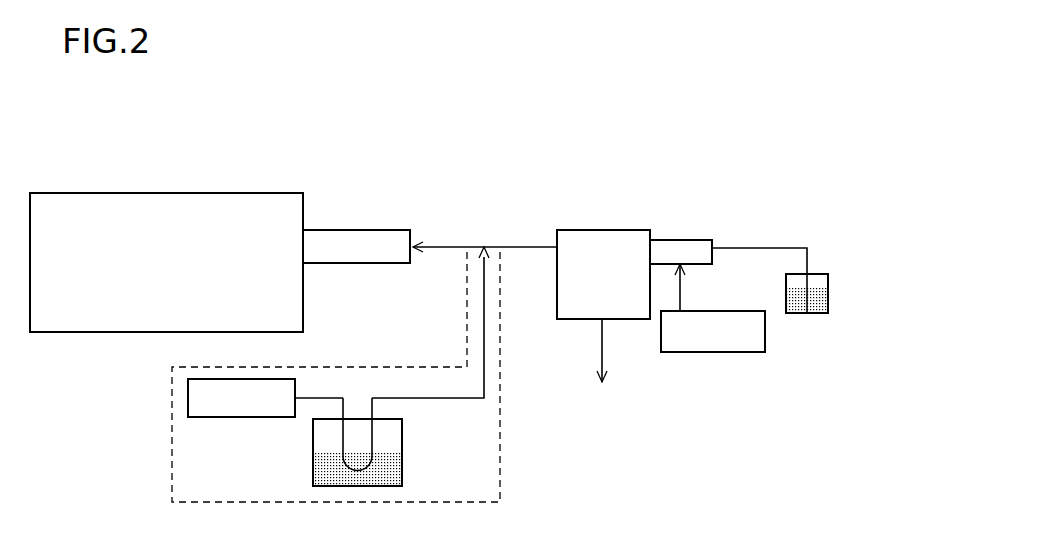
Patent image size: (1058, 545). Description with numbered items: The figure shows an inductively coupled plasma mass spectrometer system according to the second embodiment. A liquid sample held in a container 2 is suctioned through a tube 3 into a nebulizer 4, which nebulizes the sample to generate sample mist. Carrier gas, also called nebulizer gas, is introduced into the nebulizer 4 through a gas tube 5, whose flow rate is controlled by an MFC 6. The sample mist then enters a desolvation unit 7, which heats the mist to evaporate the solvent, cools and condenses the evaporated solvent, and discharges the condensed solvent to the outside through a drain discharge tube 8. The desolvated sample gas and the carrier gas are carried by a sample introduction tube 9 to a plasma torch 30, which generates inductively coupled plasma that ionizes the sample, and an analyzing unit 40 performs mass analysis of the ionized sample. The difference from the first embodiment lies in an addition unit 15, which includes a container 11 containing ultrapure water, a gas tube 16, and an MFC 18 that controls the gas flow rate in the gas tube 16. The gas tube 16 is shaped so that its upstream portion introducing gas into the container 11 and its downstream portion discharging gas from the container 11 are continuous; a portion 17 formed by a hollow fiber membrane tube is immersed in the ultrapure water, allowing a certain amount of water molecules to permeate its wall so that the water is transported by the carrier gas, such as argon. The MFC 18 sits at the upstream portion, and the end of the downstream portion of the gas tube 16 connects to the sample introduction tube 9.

The container 2 is at (829, 296).
The tube 3 is at (788, 248).
The nebulizer 4 is at (684, 240).
The gas tube 5 is at (682, 295).
The MFC 6 is at (712, 352).
The desolvation unit 7 is at (623, 230).
The drain discharge tube 8 is at (601, 352).
The sample introduction tube 9 is at (507, 247).
The container 11 is at (402, 455).
The addition unit 15 is at (502, 465).
The gas tube 16 is at (486, 344).
The hollow fiber filter portion 17 is at (356, 470).
The MFC 18 is at (240, 417).
The plasma torch 30 is at (355, 230).
The analyzing unit 40 is at (167, 193).